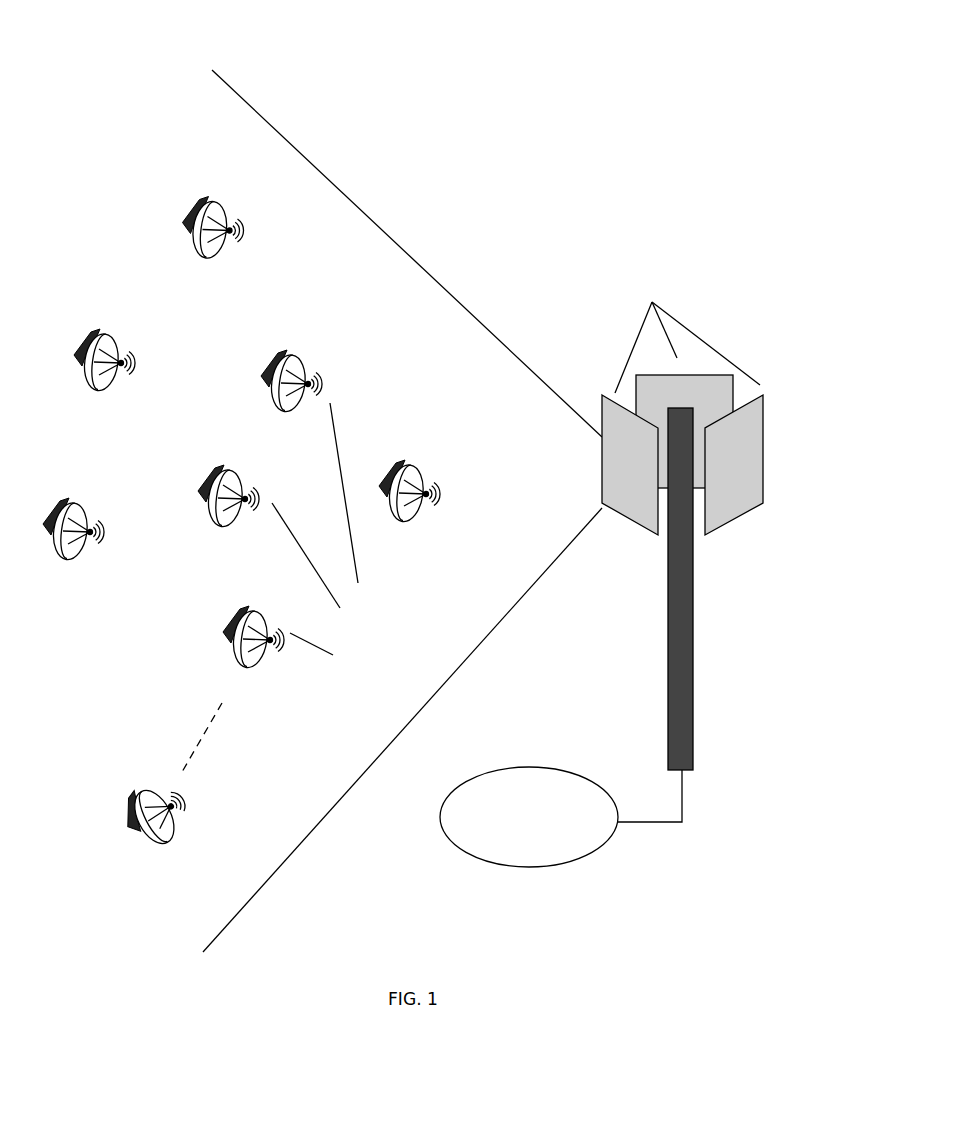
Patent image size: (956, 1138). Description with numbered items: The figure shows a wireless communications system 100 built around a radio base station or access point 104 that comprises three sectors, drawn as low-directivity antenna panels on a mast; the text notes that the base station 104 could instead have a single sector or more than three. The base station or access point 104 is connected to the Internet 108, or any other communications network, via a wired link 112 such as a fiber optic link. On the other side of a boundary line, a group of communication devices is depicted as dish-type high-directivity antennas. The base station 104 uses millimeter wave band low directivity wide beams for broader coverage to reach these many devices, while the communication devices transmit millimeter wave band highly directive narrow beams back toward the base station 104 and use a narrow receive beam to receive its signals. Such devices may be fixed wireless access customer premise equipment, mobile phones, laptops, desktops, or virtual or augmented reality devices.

The wireless communications system 100 is at (455, 46).
The radio base station or access point 104 is at (770, 425).
The Internet 108 is at (547, 867).
The wired link 112 is at (677, 797).